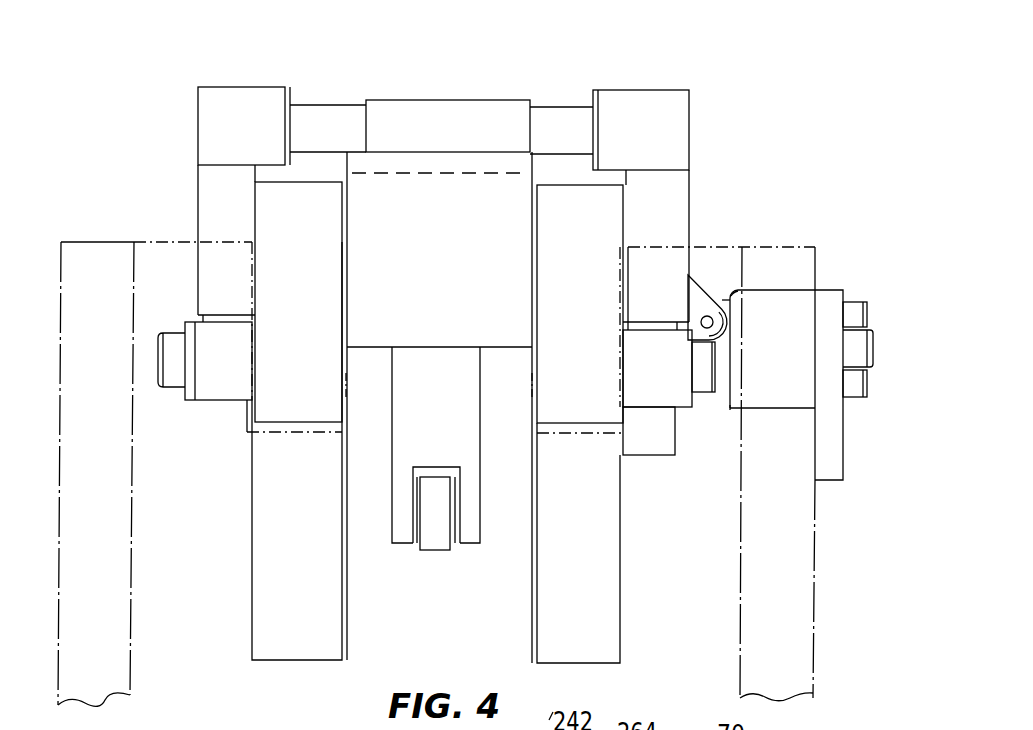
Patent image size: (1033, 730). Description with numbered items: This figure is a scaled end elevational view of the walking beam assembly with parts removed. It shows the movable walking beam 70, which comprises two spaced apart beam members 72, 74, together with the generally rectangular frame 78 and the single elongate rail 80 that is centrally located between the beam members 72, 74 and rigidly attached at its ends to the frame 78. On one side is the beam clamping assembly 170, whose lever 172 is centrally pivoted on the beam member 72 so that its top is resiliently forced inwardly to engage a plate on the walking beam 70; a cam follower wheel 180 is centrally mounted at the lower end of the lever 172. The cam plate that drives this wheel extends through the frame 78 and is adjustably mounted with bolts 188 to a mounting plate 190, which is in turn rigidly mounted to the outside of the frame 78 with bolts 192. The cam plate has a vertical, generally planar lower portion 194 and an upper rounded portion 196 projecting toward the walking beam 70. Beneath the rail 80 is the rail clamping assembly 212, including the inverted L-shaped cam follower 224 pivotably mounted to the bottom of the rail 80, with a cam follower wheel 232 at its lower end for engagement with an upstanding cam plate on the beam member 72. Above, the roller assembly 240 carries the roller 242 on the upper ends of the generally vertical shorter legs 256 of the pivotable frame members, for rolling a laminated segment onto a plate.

The walking beam 70 is at (637, 484).
The beam member 72 is at (591, 340).
The beam member 74 is at (317, 354).
The frame 78 is at (818, 247).
The rail 80 is at (447, 283).
The clamping assembly 170 is at (790, 470).
The lever 172 is at (697, 292).
The cam follower wheel 180 is at (722, 300).
The bolts 188 is at (868, 305).
The mounting plate 190 is at (845, 470).
The bolts 192 is at (878, 342).
The lower portion 194 is at (730, 412).
The upper rounded portion 196 is at (732, 292).
The rail clamping assembly 212 is at (368, 469).
The cam follower 224 is at (480, 490).
The cam follower wheel 232 is at (443, 552).
The roller assembly 240 is at (178, 114).
The roller 242 is at (480, 100).
The shorter leg 256 is at (198, 192).